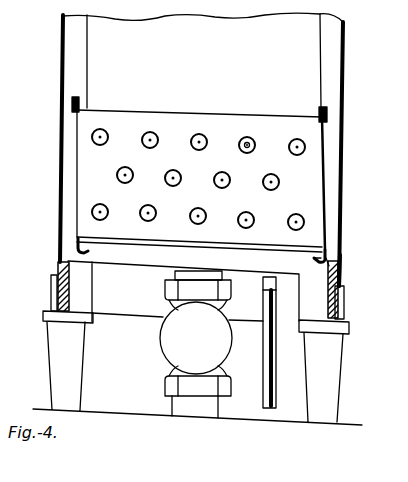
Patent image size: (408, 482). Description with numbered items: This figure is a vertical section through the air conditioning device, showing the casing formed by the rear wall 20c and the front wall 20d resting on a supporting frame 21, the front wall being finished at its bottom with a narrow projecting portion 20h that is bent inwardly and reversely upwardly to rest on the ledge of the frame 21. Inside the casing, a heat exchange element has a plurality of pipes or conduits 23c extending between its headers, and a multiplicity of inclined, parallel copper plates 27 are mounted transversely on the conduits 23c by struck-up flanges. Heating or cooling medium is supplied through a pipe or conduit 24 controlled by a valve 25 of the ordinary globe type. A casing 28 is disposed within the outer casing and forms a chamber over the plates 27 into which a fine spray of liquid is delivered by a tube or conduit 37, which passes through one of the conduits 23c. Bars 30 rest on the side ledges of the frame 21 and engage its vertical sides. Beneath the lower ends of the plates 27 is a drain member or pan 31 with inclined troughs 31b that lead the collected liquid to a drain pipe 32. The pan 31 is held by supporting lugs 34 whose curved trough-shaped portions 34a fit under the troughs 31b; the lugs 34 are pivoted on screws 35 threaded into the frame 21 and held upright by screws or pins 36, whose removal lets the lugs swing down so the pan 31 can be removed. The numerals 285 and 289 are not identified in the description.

The rear wall 20c is at (58, 135).
The front wall 20d is at (344, 148).
The narrow projecting portion 20h is at (342, 290).
The supporting frame 21 is at (130, 316).
The pipes or conduits 23c is at (243, 138).
The pipe or conduit 24 is at (180, 404).
The valve 25 is at (162, 330).
The plates 27 is at (122, 117).
The casing 28 is at (88, 67).
The fastener 285 is at (72, 104).
The plate edge flange 289 is at (78, 182).
The bars 30 is at (53, 300).
The drain member or pan 31 is at (133, 263).
The troughs 31b is at (68, 238).
The drain pipe 32 is at (261, 383).
The supporting lugs 34 is at (82, 258).
The curved trough-shaped portions 34a is at (318, 257).
The screws 35 is at (342, 296).
The screws or pins 36 is at (300, 280).
The tube or conduit 37 is at (254, 139).